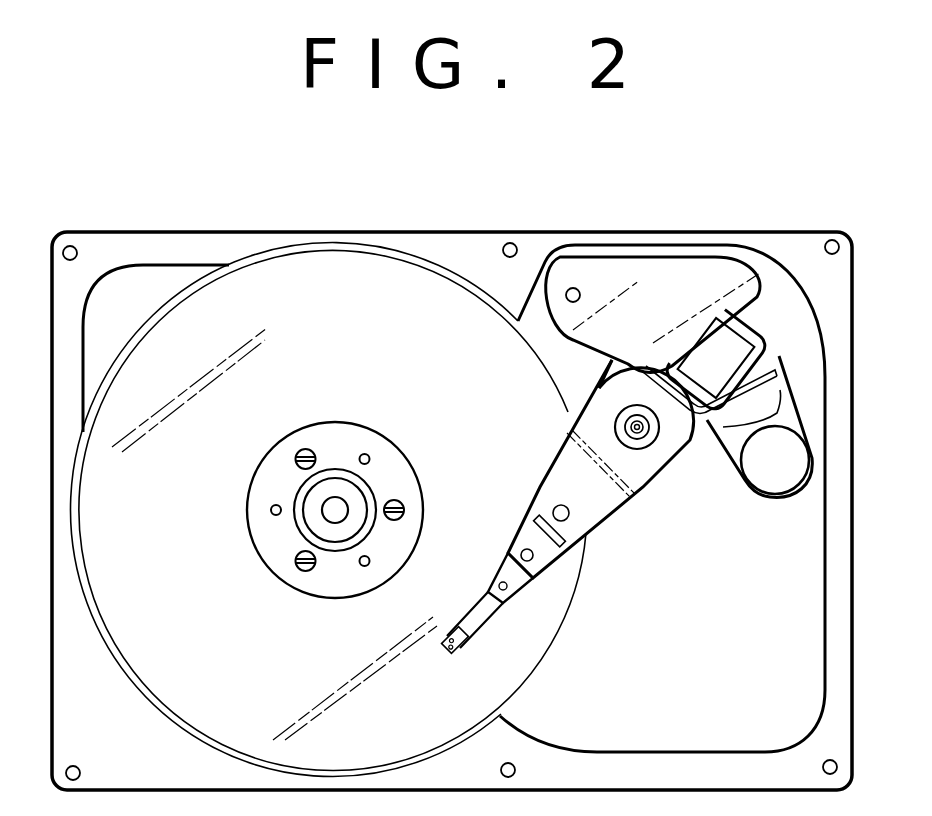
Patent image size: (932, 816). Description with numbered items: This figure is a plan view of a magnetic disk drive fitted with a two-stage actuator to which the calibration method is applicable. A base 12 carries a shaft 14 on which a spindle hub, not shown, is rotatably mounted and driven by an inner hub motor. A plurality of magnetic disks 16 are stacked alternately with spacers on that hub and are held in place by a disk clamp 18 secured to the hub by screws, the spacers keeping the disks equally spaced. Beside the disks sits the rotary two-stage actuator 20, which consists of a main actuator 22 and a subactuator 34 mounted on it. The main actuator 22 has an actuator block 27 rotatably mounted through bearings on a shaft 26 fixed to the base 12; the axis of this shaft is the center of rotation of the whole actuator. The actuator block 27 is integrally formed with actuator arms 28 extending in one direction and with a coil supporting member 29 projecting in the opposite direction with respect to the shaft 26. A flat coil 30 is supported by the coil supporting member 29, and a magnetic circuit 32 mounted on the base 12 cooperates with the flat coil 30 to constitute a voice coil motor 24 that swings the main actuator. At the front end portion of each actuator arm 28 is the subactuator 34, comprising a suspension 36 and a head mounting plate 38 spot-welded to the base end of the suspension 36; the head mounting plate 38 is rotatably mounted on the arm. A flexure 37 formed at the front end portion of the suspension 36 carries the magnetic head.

The base 12 is at (447, 242).
The shaft 14 is at (335, 508).
The magnetic disks 16 is at (310, 265).
The disk clamp 18 is at (333, 432).
The rotary two-stage actuator 20 is at (667, 485).
The main actuator 22 is at (604, 528).
The voice coil motor 24 is at (632, 258).
The shaft 26 is at (632, 427).
The actuator block 27 is at (597, 390).
The actuator arms 28 is at (547, 488).
The coil supporting member 29 is at (762, 408).
The flat coil 30 is at (758, 330).
The magnetic circuit 32 is at (773, 392).
The subactuator 34 is at (524, 594).
The suspension 36 is at (472, 615).
The flexure 37 is at (455, 655).
The head mounting plate 38 is at (508, 570).